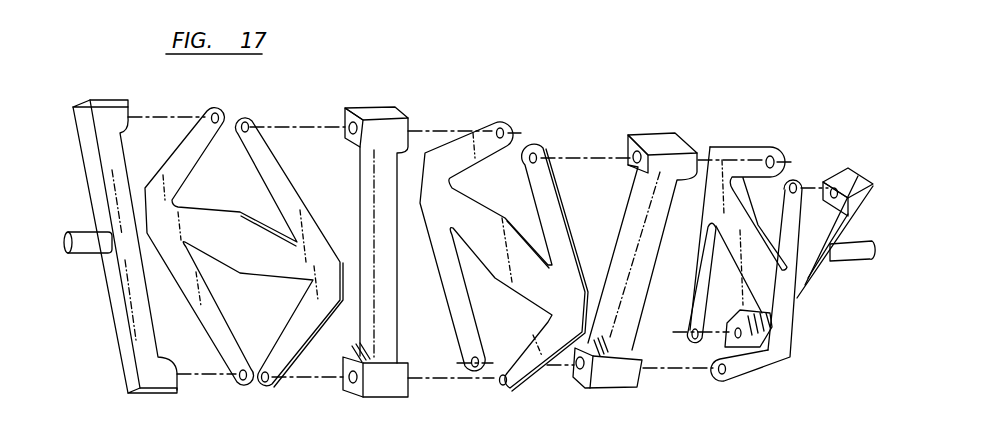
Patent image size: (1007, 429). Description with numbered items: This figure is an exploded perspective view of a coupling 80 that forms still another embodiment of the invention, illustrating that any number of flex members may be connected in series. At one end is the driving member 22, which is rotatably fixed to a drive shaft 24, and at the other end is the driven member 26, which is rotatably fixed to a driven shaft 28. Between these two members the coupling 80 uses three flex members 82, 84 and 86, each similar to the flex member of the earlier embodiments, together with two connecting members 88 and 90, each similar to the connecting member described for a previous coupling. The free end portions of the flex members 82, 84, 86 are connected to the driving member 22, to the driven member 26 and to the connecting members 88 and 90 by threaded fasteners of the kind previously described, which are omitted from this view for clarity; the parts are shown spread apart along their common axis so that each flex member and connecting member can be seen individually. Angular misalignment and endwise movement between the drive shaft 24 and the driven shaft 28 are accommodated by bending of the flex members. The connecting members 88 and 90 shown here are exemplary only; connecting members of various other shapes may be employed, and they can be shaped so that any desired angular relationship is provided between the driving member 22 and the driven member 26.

The driving member 22 is at (118, 118).
The drive shaft 24 is at (82, 236).
The driven member 26 is at (860, 178).
The driven shaft 28 is at (858, 242).
The coupling 80 is at (642, 90).
The flex member 82 is at (246, 122).
The flex member 84 is at (493, 120).
The flex member 86 is at (758, 150).
The connecting member 88 is at (385, 124).
The connecting member 90 is at (652, 138).